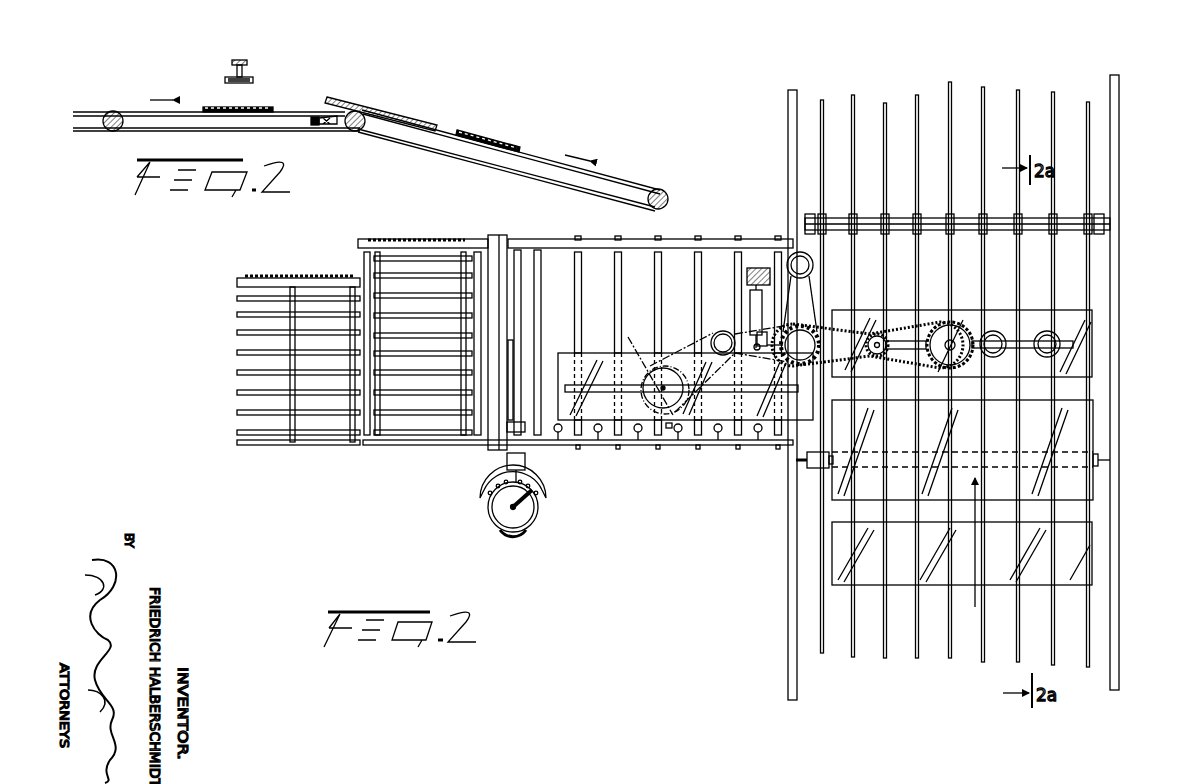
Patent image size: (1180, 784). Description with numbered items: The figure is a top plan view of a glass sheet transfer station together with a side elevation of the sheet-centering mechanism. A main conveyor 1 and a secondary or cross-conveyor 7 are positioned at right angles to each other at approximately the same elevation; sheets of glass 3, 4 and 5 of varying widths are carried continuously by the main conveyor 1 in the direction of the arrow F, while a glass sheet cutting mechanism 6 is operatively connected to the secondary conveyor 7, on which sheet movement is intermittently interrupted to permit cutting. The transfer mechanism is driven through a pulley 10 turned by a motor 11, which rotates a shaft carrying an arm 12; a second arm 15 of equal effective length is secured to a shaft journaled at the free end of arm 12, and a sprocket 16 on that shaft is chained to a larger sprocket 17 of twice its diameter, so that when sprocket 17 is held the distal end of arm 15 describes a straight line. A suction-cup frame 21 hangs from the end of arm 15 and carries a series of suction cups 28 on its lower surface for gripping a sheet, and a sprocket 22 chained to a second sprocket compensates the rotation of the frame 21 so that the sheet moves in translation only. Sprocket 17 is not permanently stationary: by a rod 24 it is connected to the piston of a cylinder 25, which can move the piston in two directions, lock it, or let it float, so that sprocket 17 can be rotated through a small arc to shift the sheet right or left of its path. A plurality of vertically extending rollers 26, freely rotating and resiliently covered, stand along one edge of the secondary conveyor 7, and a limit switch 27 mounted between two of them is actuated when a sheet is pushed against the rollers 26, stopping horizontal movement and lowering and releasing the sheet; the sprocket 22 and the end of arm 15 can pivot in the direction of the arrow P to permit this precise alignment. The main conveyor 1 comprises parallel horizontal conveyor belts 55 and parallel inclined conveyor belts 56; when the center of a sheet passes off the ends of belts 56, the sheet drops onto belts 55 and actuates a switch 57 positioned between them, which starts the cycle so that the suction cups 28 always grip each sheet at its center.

In FIG. 2, the main conveyor 1 is at (806, 467).
In FIG. 2A, the sheet of glass 3 is at (480, 138).
In FIG. 2, the sheet of glass 3 is at (1080, 540).
In FIG. 2A, the sheet of glass 4 is at (380, 112).
In FIG. 2, the sheet of glass 4 is at (1085, 437).
In FIG. 2A, the sheet of glass 5 is at (217, 107).
In FIG. 2, the glass sheet cutting mechanism 6 is at (474, 462).
In FIG. 2, the secondary or cross-conveyor 7 is at (690, 232).
In FIG. 2, the pulley 10 is at (805, 355).
In FIG. 2, the motor 11 is at (802, 265).
In FIG. 2, the arm 12 is at (830, 338).
In FIG. 2, the arm 15 is at (905, 350).
In FIG. 2, the sprocket 16 is at (722, 335).
In FIG. 2, the sprocket 17 is at (808, 327).
In FIG. 2A, the suction-cup frame 21 is at (253, 77).
In FIG. 2, the suction-cup frame 21 is at (1040, 353).
In FIG. 2, the sprocket 22 is at (993, 358).
In FIG. 2, the rod 24 is at (773, 358).
In FIG. 2, the cylinder 25 is at (750, 312).
In FIG. 2, the vertically extending rollers 26 is at (636, 434).
In FIG. 2, the limit switch 27 is at (668, 436).
In FIG. 2, the suction cups 28 is at (1080, 322).
In FIG. 2A, the conveyor belts 55 is at (142, 130).
In FIG. 2, the conveyor belts 55 is at (1095, 272).
In FIG. 2A, the conveyor belts 56 is at (600, 176).
In FIG. 2, the conveyor belts 56 is at (815, 625).
In FIG. 2A, the switch 57 is at (317, 124).
In FIG. 2, the arrow P1 P is at (637, 352).
In FIG. 2, the arrow F is at (975, 595).